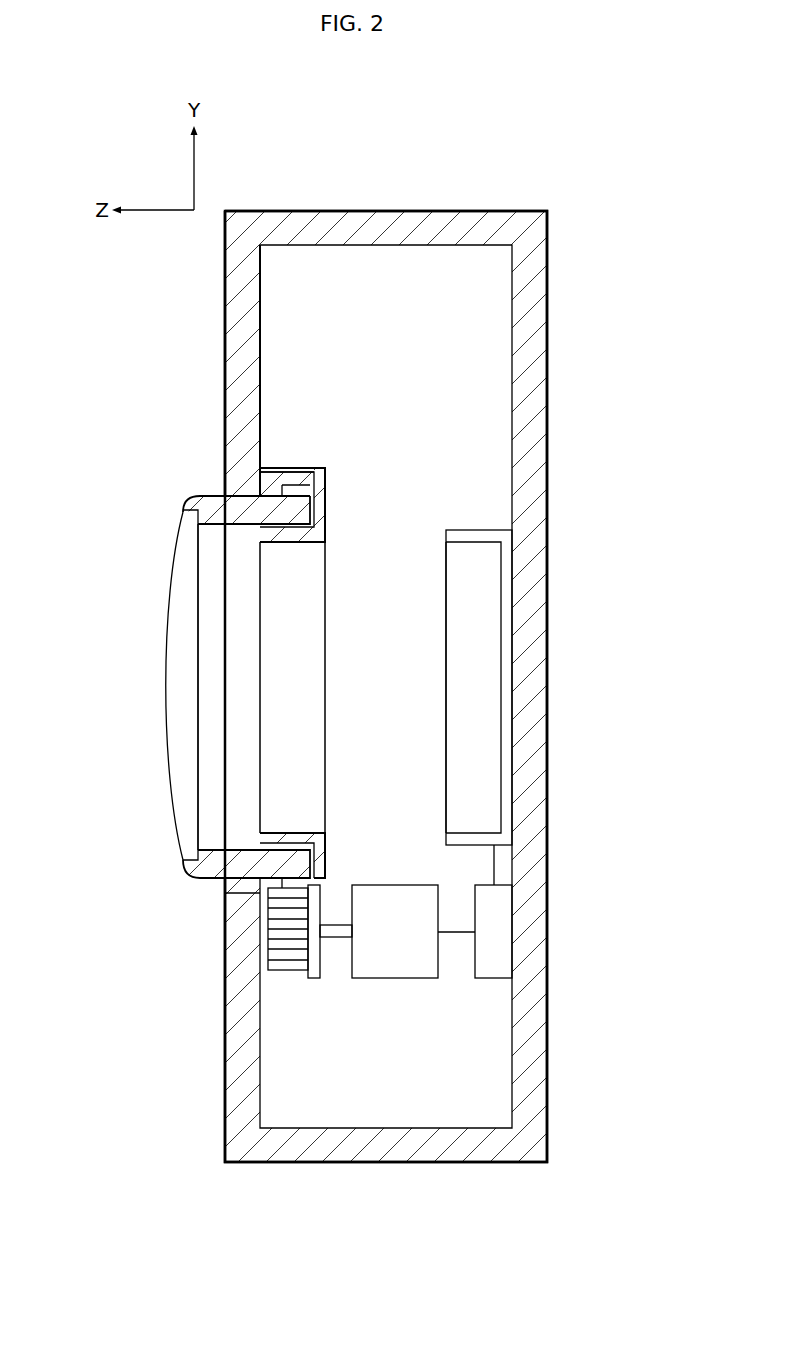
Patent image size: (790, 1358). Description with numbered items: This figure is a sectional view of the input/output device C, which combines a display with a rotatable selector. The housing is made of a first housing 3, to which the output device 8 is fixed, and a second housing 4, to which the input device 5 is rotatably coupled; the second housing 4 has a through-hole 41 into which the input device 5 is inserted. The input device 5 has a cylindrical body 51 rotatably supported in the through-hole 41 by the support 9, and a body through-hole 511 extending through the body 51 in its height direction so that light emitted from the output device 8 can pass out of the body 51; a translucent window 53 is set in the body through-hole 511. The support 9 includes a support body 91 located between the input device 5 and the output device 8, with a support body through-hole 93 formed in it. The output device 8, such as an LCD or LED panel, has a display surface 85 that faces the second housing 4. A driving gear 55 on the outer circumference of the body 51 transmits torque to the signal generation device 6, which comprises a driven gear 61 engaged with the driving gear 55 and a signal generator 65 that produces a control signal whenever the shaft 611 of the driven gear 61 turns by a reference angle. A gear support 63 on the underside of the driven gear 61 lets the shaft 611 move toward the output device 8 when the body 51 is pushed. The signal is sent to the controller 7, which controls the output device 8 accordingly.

The input/output device C is at (571, 203).
The first housing 3 is at (537, 276).
The second housing 4 is at (238, 414).
The through-hole 41 is at (246, 494).
The input device 5 is at (161, 726).
The body 51 is at (217, 870).
The body through-hole 511 is at (222, 764).
The window 53 is at (177, 677).
The driving gear 55 is at (182, 917).
The signal generation device 6 is at (365, 1089).
The driven gear 61 is at (285, 970).
The gear support 63 is at (316, 978).
The shaft 611 is at (342, 937).
The signal generator 65 is at (405, 960).
The controller 7 is at (495, 935).
The output device 8 is at (483, 722).
The display surface 85 is at (443, 756).
The support 9 is at (458, 667).
The support body 91 is at (322, 498).
The support body through-hole 93 is at (292, 662).